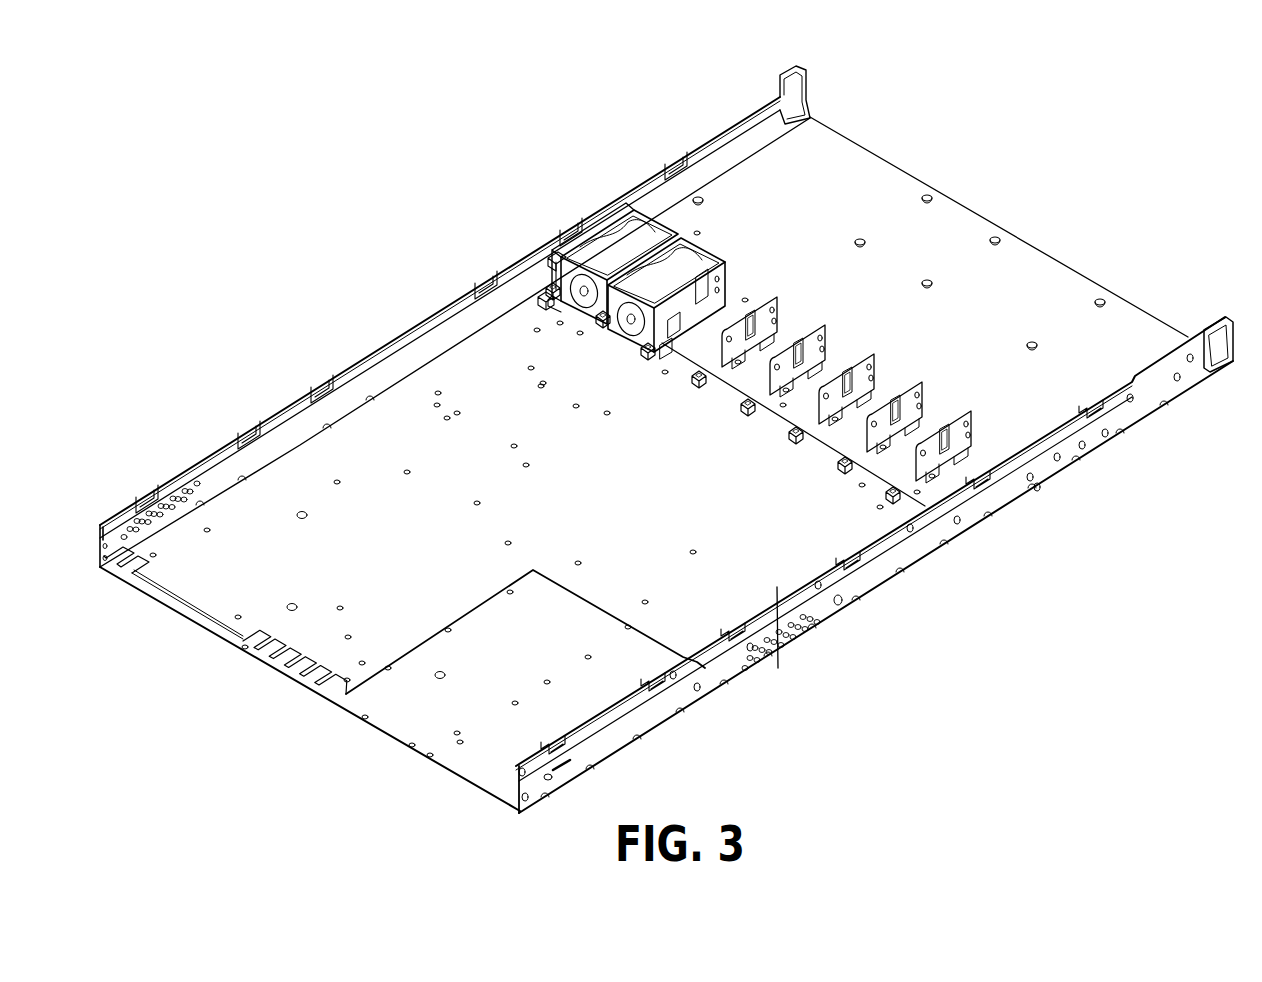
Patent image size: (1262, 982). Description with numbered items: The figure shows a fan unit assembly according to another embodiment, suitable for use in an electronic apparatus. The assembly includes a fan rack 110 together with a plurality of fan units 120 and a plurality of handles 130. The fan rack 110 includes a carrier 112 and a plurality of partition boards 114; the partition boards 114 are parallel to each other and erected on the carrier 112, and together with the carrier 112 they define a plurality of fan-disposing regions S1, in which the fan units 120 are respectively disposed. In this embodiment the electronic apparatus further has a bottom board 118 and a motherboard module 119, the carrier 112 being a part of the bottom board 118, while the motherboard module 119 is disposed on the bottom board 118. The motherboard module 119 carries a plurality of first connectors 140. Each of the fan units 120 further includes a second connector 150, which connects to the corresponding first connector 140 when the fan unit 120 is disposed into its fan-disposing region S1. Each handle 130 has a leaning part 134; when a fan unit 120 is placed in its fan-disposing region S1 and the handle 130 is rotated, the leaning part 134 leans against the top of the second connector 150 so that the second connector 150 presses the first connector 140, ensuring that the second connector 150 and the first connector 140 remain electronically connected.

The fan rack 110 is at (666, 439).
The carrier 112 is at (602, 464).
The partition boards 114 is at (887, 474).
The bottom board 118 is at (856, 170).
The motherboard module 119 is at (778, 668).
The fan units 120 is at (607, 247).
The handles 130 is at (567, 244).
The leaning part 134 is at (558, 262).
The first connectors 140 is at (555, 298).
The second connector 150 is at (538, 300).
The fan-disposing regions S1 is at (743, 296).